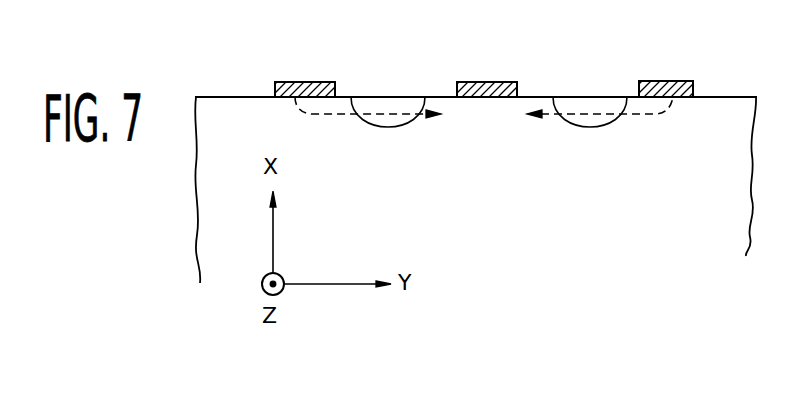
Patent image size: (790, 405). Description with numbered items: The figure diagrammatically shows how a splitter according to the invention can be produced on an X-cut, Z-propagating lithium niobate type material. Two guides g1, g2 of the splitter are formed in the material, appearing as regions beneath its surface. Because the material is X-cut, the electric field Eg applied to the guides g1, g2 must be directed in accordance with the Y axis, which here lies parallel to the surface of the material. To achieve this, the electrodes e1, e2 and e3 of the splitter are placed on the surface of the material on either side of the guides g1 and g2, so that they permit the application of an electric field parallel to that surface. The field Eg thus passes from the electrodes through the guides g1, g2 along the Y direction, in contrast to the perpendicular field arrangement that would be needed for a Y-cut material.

The electrode e1 is at (311, 59).
The electrode e2 is at (493, 82).
The electrode e3 is at (660, 81).
The guide g1 is at (384, 127).
The guide g2 is at (590, 127).
The electric field Eg is at (497, 97).